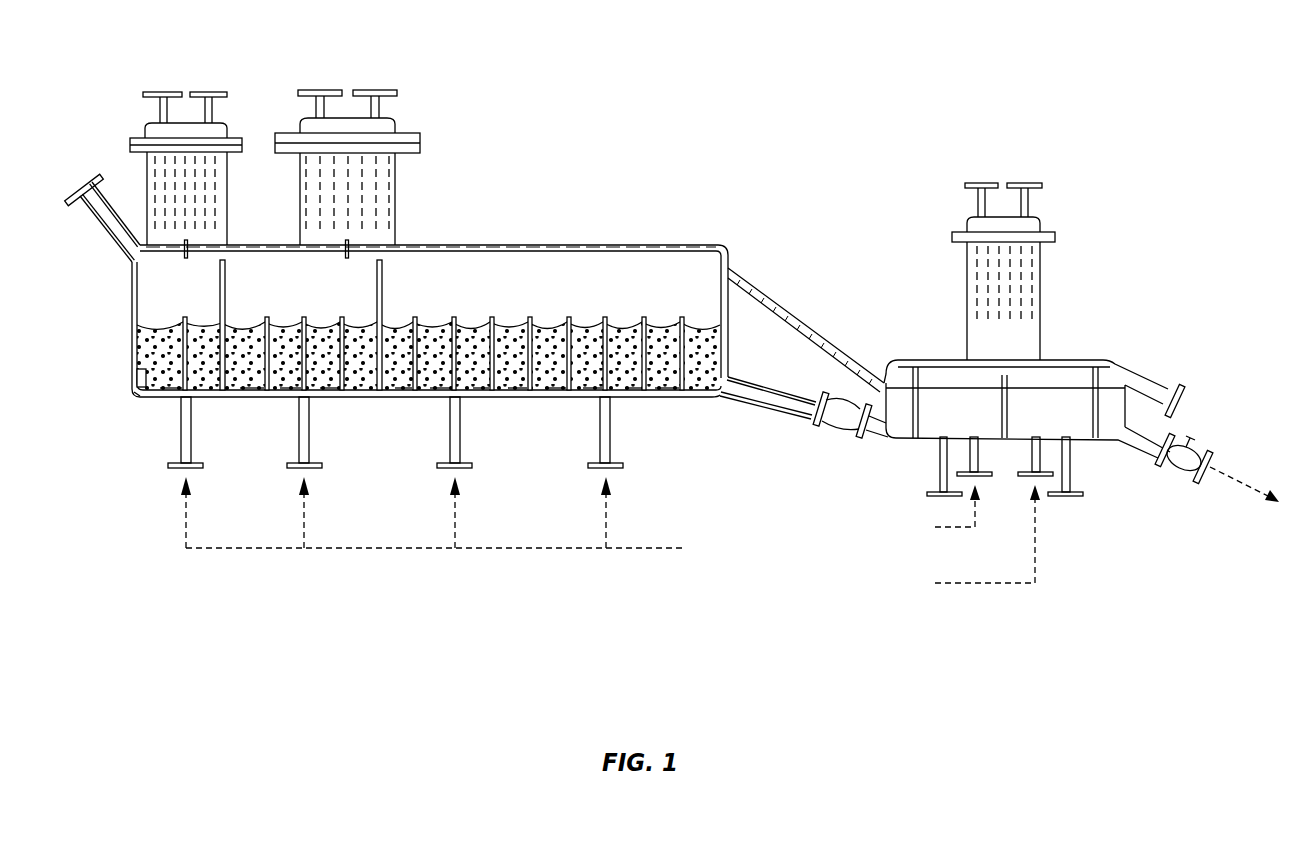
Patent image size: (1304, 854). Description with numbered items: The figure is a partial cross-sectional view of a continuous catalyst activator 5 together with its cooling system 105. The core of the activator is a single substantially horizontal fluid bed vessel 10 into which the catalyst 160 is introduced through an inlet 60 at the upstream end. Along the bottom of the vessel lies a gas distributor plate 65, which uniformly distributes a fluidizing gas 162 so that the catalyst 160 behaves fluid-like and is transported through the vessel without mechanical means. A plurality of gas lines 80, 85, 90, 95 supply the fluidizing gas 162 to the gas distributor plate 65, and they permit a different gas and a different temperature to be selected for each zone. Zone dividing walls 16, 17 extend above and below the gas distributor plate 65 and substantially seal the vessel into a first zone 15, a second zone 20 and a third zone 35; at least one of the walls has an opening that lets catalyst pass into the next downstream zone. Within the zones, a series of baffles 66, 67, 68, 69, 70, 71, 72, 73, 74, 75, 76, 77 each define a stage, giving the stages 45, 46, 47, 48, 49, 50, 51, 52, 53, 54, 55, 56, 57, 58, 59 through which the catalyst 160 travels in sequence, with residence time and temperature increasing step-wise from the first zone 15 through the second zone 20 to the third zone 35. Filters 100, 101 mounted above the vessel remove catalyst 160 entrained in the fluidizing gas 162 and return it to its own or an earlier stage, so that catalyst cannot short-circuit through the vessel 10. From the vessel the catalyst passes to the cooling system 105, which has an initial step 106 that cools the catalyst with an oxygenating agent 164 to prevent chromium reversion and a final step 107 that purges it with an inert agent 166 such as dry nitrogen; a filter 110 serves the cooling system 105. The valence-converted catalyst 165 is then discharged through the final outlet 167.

The continuous catalyst activator 5 is at (753, 86).
The fluid bed vessel 10 is at (132, 290).
The first zone 15 is at (170, 283).
The second zone 20 is at (317, 283).
The third zone 35 is at (560, 282).
The zone dividing wall 16 is at (221, 385).
The zone dividing wall 17 is at (378, 385).
The stage 45 is at (135, 387).
The stage 46 is at (208, 350).
The stage 47 is at (261, 350).
The stage 48 is at (297, 350).
The stage 49 is at (333, 350).
The stage 50 is at (370, 350).
The stage 51 is at (411, 350).
The stage 52 is at (448, 350).
The stage 53 is at (486, 350).
The stage 54 is at (521, 350).
The stage 55 is at (558, 350).
The stage 56 is at (595, 350).
The stage 57 is at (631, 350).
The stage 58 is at (670, 350).
The stage 59 is at (708, 350).
The inlet 60 is at (78, 186).
The gas distributor plate 65 is at (137, 377).
The baffle 66 is at (180, 378).
The baffle 67 is at (265, 378).
The baffle 68 is at (302, 378).
The baffle 69 is at (343, 378).
The baffle 70 is at (416, 378).
The baffle 71 is at (452, 378).
The baffle 72 is at (495, 378).
The baffle 73 is at (530, 378).
The baffle 74 is at (564, 378).
The baffle 75 is at (602, 378).
The baffle 76 is at (645, 378).
The baffle 77 is at (685, 378).
The gas line 80 is at (186, 530).
The gas line 85 is at (304, 530).
The gas line 90 is at (455, 530).
The gas line 95 is at (606, 530).
The filter 100 is at (148, 130).
The filter 101 is at (397, 128).
The cooling system 105 is at (1073, 358).
The initial step 106 is at (980, 429).
The final step 107 is at (1072, 429).
The filter 110 is at (977, 340).
The catalyst 160 is at (148, 350).
The fluidizing gas 162 is at (365, 548).
The oxygenating agent 164 is at (955, 527).
The inert agent 166 is at (985, 583).
The valence-converted catalyst 165 is at (1240, 480).
The final outlet 167 is at (1155, 463).